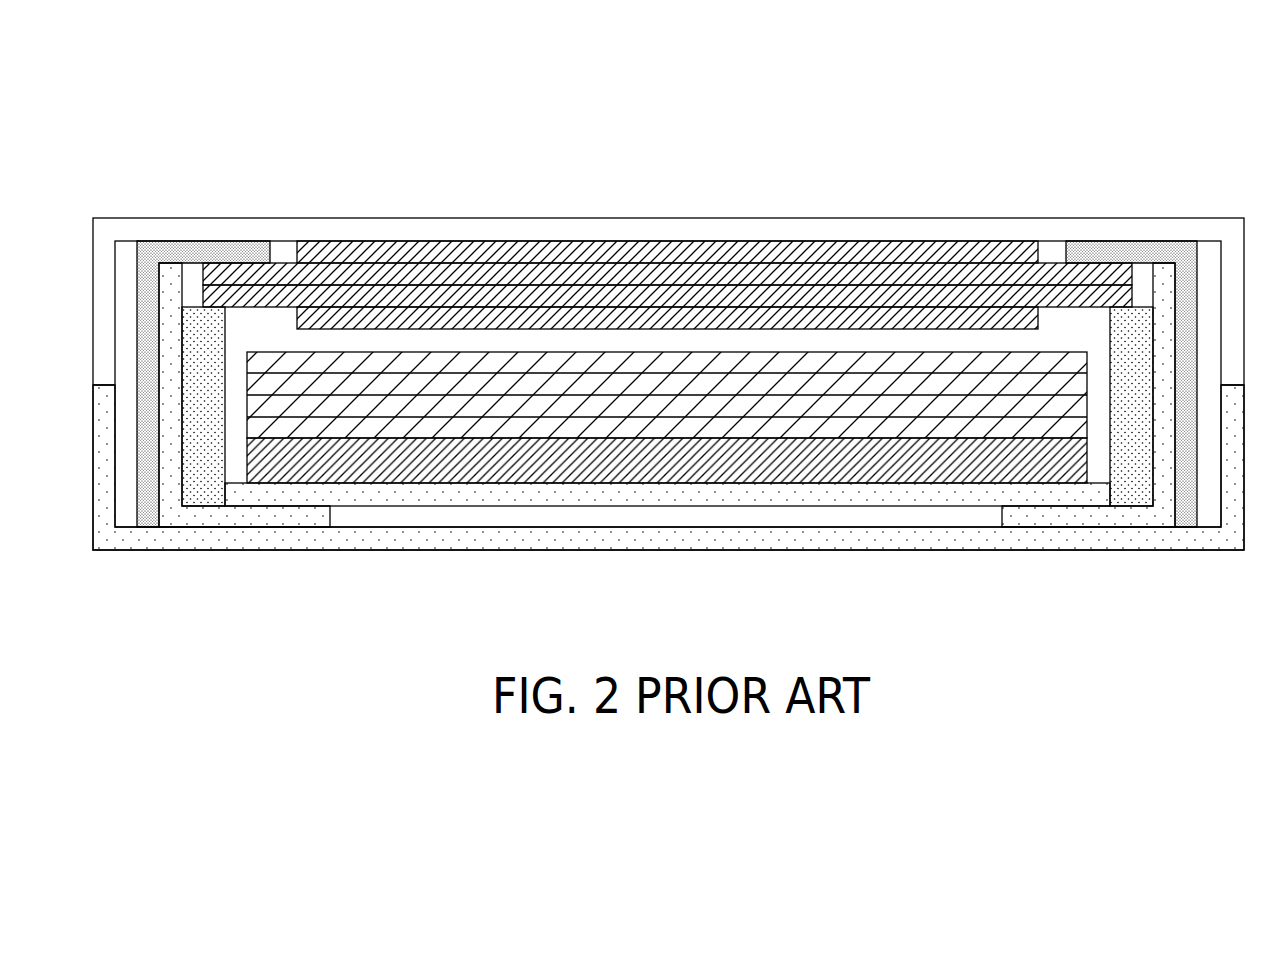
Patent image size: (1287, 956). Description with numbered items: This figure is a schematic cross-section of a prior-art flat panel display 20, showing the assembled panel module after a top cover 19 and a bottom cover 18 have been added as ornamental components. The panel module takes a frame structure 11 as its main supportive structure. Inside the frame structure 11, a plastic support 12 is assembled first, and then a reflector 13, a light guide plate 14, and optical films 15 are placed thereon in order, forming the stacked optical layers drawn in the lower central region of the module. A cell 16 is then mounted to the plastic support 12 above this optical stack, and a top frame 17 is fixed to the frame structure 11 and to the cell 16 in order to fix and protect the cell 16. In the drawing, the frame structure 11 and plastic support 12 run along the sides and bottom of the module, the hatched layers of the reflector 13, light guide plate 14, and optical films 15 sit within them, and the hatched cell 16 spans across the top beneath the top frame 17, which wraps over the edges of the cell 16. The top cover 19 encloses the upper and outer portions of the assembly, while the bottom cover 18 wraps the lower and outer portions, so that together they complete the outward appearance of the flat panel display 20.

The flat panel display 20 is at (1157, 87).
The top cover 19 is at (1228, 352).
The bottom cover 18 is at (1228, 445).
The top frame 17 is at (162, 247).
The cell 16 is at (850, 295).
The optical films 15 is at (768, 430).
The light guide plate 14 is at (552, 467).
The reflector 13 is at (603, 498).
The plastic support 12 is at (195, 493).
The frame structure 11 is at (273, 513).